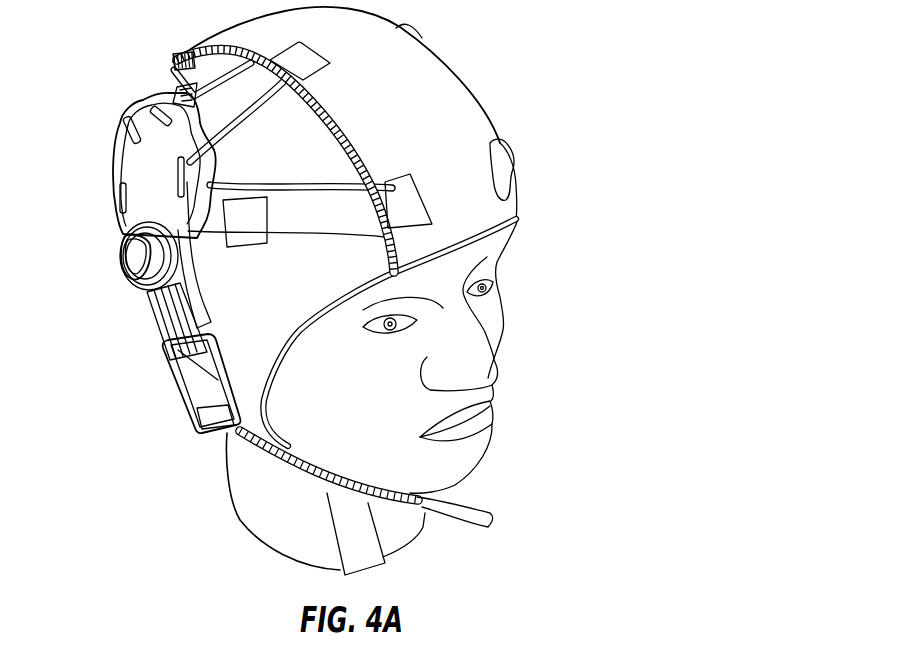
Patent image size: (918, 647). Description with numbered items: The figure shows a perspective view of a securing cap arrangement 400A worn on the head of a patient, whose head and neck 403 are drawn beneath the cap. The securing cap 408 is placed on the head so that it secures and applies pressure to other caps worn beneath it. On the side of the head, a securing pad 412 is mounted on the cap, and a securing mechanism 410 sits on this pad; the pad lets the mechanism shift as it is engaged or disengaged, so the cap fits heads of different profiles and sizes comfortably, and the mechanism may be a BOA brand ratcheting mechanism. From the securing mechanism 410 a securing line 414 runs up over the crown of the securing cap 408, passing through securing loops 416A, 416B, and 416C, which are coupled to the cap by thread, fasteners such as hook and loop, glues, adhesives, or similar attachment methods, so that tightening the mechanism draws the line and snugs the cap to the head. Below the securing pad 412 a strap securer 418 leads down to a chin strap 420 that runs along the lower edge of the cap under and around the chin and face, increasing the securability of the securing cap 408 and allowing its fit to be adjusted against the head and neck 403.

The head-mounted sensor cap assembly 400A is at (512, 42).
The wearer's head and neck 403 is at (248, 475).
The securing cap 408 is at (293, 306).
The securing mechanism 410 is at (137, 257).
The securing pad 412 is at (122, 153).
The securing line 414 is at (232, 76).
The securing loop 416A is at (400, 177).
The securing loop 416B is at (323, 67).
The securing loop 416C is at (178, 57).
The strap securer 418 is at (197, 387).
The chin strap 420 is at (284, 470).